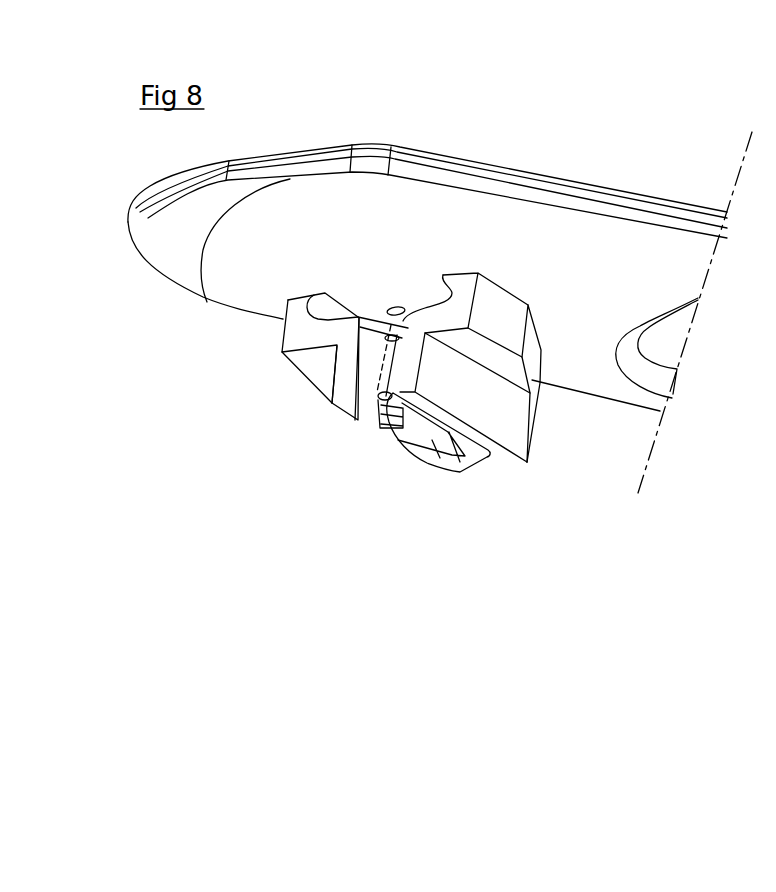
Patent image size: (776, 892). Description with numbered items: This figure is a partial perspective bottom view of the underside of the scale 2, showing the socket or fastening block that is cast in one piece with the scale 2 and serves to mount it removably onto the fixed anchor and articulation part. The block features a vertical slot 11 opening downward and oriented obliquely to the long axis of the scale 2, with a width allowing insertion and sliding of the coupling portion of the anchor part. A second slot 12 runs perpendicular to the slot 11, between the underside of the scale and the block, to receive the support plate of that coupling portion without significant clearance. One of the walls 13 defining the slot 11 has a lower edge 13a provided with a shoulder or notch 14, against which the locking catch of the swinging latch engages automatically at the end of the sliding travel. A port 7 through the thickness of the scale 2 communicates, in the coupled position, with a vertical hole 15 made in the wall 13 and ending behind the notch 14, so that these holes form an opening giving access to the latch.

The scale 2 is at (618, 300).
The port 7 is at (392, 307).
The vertical slot 11 is at (396, 368).
The second slot 12 is at (410, 302).
The wall 13 is at (334, 400).
The lower edge 13a is at (428, 467).
The shoulder or notch 14 is at (365, 422).
The vertical hole 15 is at (388, 428).